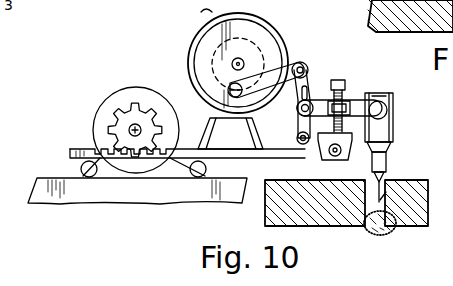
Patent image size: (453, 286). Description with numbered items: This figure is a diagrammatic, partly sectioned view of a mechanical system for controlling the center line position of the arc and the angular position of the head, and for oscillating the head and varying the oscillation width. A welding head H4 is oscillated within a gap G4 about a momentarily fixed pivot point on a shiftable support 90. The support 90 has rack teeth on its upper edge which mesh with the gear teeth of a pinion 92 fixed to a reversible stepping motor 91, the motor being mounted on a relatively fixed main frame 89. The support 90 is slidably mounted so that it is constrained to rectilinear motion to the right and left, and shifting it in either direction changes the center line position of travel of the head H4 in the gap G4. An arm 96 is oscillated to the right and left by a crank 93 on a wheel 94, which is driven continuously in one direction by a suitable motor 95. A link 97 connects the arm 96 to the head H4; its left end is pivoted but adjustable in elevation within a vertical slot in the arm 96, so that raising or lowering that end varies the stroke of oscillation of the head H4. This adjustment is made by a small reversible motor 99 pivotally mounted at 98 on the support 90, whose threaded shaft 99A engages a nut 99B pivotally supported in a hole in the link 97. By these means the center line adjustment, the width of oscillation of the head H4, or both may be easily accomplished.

The main frame 89 is at (122, 190).
The shiftable support 90 is at (259, 162).
The reversible stepping motor 91 is at (133, 90).
The pinion 92 is at (125, 94).
The crank 93 is at (243, 93).
The wheel 94 is at (263, 30).
The motor 95 is at (201, 12).
The arm 96 is at (309, 78).
The link 97 is at (392, 129).
The pivot 98 is at (334, 162).
The small reversible motor 99 is at (326, 148).
The threaded shaft 99A is at (336, 90).
The nut 99B is at (366, 97).
The welding head H4 is at (394, 108).
The gap G4 is at (387, 192).